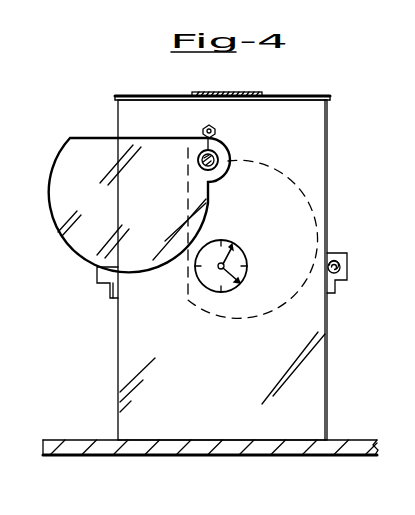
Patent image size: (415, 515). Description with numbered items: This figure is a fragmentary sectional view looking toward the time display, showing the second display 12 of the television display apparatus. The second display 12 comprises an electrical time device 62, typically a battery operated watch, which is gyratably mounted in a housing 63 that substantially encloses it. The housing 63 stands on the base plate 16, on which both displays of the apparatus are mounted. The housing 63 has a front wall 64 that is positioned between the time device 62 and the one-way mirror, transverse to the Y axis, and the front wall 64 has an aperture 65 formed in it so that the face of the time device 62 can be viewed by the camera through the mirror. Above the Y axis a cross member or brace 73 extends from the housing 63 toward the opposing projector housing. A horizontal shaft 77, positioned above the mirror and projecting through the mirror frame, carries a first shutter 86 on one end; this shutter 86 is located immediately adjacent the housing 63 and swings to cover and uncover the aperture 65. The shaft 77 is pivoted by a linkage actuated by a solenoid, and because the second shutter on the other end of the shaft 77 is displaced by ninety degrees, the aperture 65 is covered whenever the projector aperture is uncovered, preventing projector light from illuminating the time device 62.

The second display 12 is at (212, 283).
The base plate 16 is at (230, 446).
The electrical time device 62 is at (200, 266).
The housing 63 is at (304, 132).
The front wall 64 is at (245, 393).
The aperture 65 is at (240, 248).
The cross member or brace 73 is at (243, 93).
The horizontal shaft 77 is at (215, 159).
The first shutter 86 is at (100, 208).